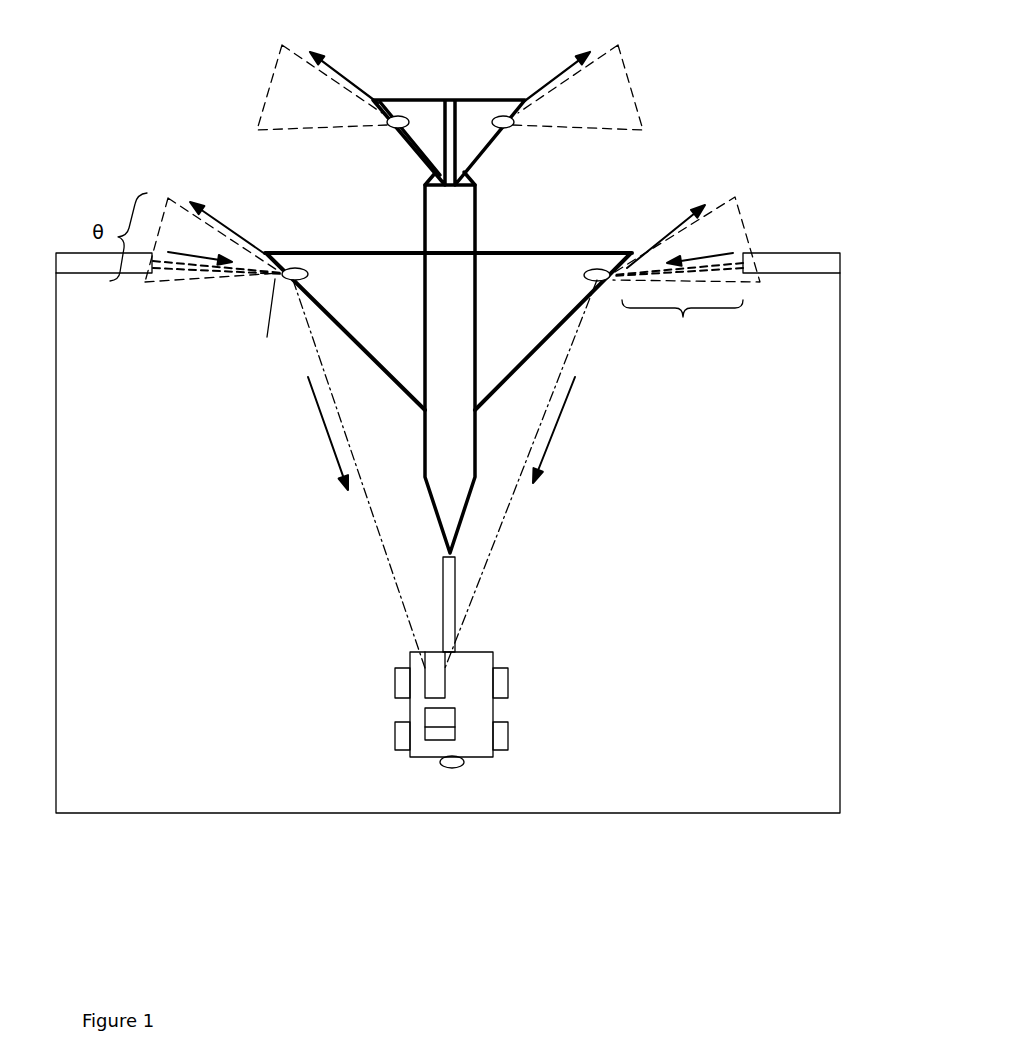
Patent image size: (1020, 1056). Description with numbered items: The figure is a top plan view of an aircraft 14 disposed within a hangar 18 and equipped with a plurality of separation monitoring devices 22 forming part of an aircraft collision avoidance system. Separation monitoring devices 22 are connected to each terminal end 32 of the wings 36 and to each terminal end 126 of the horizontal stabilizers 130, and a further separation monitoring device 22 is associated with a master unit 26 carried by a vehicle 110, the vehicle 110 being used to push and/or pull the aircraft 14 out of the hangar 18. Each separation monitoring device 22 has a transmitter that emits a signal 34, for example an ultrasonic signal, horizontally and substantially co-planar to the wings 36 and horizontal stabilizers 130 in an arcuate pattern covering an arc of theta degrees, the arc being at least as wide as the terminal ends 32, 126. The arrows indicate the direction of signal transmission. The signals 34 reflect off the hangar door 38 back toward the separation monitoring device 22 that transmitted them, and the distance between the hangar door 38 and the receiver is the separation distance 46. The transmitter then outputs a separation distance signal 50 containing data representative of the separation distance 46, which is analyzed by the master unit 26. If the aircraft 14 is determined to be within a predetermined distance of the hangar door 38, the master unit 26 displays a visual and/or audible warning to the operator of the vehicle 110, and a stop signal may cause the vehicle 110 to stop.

The aircraft 14 is at (450, 362).
The hangar 18 is at (56, 353).
The separation monitoring device 22 is at (398, 116).
The master unit 26 is at (435, 677).
The terminal end of the wing 32 is at (325, 317).
The signal 34 is at (196, 281).
The wing 36 is at (448, 331).
The hangar door 38 is at (800, 253).
The separation distance 46 is at (686, 273).
The separation distance signal 50 is at (507, 512).
The vehicle 110 is at (493, 709).
The terminal end of the horizontal stabilizer 126 is at (392, 126).
The horizontal stabilizer 130 is at (420, 130).